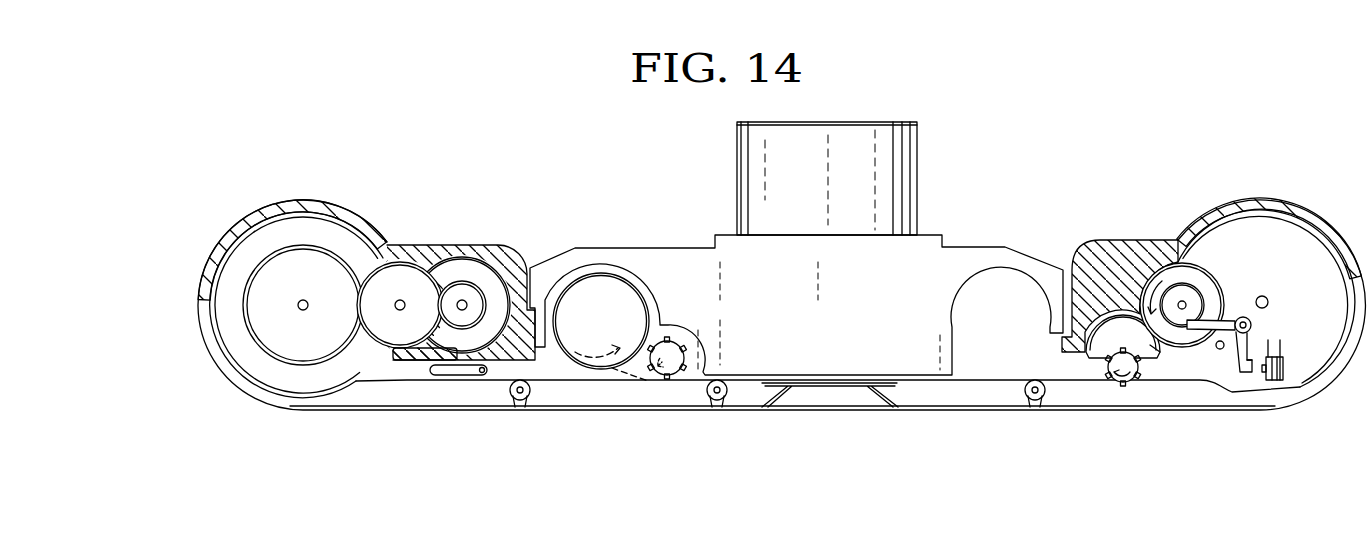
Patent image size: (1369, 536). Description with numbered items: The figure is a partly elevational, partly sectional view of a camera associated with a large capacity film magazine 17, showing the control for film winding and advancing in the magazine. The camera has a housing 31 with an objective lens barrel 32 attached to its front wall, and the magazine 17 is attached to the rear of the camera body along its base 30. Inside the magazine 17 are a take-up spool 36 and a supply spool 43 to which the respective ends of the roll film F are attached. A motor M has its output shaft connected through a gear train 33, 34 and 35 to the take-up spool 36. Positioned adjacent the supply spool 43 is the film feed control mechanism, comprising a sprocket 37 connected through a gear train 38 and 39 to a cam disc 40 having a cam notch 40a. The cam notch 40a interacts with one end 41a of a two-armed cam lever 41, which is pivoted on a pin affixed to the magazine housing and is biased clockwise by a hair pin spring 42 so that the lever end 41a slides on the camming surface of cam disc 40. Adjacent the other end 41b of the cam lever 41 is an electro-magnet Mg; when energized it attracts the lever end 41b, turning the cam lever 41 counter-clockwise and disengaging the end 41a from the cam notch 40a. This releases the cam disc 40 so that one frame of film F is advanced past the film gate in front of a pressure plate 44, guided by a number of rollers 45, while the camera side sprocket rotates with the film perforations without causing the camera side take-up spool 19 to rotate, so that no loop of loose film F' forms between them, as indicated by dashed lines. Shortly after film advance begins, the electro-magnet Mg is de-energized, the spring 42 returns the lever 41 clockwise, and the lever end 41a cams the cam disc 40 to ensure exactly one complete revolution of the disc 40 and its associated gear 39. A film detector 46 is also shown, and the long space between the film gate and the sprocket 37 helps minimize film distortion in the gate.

The film magazine 17 is at (1117, 252).
The camera side take-up spool 19 is at (604, 278).
The base chassis 30 is at (930, 412).
The housing 31 is at (690, 258).
The objective lens barrel 32 is at (900, 150).
The gear 33 is at (476, 292).
The gear 34 is at (402, 268).
The gear 35 is at (336, 258).
The take-up spool 36 is at (324, 228).
The sprocket 37 is at (1119, 372).
The gear 38 is at (1157, 347).
The gear 39 is at (1207, 287).
The cam disc 40 is at (1188, 302).
The cam notch 40a is at (1180, 330).
The cam lever 41 is at (1231, 320).
The lever end 41a is at (1224, 300).
The lever end 41b is at (1252, 375).
The hair pin spring 42 is at (1226, 350).
The supply spool 43 is at (1258, 222).
The pressure plate 44 is at (827, 388).
The rollers 45 is at (520, 402).
The film detector 46 is at (437, 377).
The motor M is at (460, 268).
The electro-magnet Mg is at (1288, 381).
The film F is at (618, 412).
The film sprocket F' is at (659, 396).